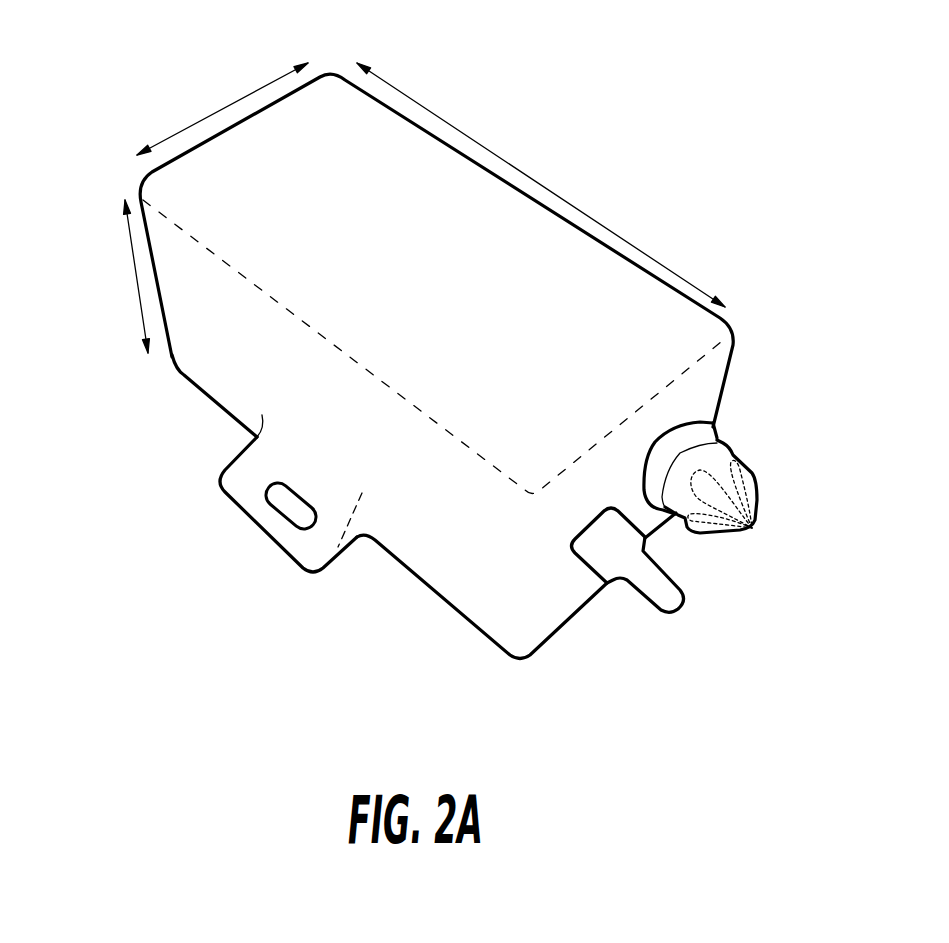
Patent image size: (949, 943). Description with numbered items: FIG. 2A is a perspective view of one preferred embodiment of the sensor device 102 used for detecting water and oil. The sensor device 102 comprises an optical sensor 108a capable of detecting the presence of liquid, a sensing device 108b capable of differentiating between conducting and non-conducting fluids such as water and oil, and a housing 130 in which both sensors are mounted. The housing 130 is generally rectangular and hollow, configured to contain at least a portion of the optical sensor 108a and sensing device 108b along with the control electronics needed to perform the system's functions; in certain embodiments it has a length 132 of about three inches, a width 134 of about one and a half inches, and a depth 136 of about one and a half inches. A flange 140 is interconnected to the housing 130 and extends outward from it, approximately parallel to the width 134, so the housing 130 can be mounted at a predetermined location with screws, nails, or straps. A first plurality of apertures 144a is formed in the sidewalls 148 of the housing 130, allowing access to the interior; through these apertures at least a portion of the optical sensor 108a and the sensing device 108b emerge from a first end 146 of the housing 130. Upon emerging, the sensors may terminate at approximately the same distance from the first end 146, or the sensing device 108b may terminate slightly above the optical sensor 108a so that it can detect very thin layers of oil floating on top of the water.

The sensor device 102 is at (436, 408).
The housing 130 is at (455, 278).
The length 132 is at (538, 170).
The width 134 is at (207, 113).
The depth 136 is at (130, 285).
The flange 140 is at (243, 494).
The sidewalls 148 is at (335, 415).
The first plurality of apertures 144a is at (670, 423).
The first end 146 is at (745, 556).
The optical sensor 108a is at (757, 527).
The sensing device 108b is at (685, 605).